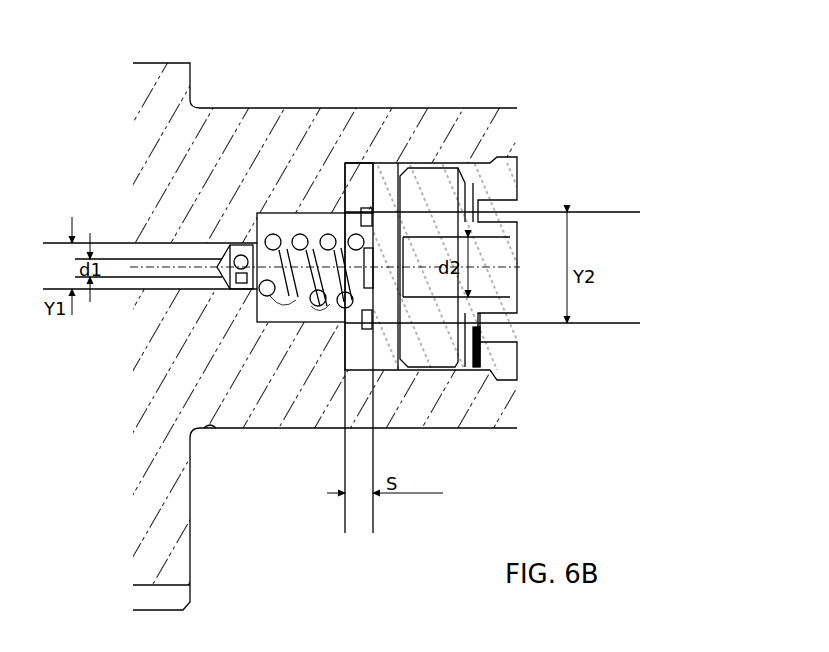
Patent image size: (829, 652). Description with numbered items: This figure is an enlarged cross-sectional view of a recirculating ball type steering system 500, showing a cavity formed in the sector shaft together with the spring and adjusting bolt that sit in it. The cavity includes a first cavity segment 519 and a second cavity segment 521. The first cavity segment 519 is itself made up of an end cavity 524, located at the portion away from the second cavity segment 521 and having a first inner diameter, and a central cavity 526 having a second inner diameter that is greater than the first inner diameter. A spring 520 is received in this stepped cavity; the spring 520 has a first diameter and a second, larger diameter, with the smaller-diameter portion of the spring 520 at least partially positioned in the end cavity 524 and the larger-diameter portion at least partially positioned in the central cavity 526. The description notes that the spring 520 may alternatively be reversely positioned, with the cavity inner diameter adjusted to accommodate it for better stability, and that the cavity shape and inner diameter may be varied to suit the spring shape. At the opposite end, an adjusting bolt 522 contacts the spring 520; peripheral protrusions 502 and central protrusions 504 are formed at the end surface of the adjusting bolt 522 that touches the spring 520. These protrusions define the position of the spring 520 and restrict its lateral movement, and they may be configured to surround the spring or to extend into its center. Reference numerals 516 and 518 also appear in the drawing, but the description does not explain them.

The recirculating ball type steering system 500 is at (630, 72).
The peripheral protrusions 502 is at (370, 213).
The central protrusions 504 is at (373, 267).
The piston body 516 is at (472, 120).
The needle 518 is at (150, 267).
The first cavity segment 519 is at (269, 210).
The spring 520 is at (373, 237).
The second cavity segment 521 is at (358, 185).
The adjusting bolt 522 is at (492, 290).
The end cavity 524 is at (253, 288).
The central cavity 526 is at (302, 310).